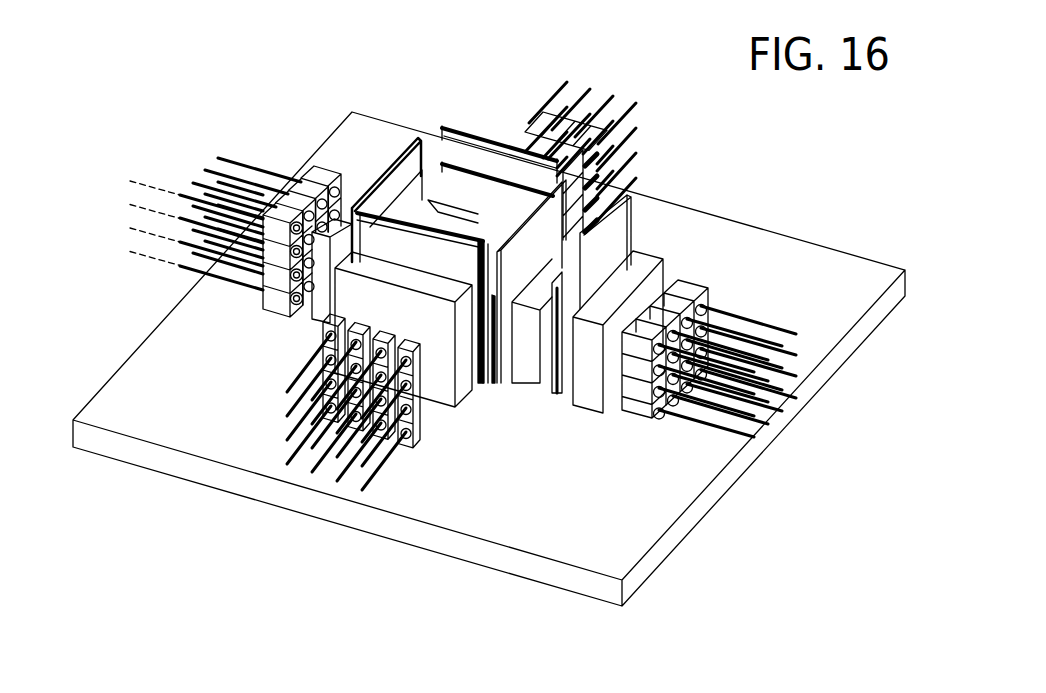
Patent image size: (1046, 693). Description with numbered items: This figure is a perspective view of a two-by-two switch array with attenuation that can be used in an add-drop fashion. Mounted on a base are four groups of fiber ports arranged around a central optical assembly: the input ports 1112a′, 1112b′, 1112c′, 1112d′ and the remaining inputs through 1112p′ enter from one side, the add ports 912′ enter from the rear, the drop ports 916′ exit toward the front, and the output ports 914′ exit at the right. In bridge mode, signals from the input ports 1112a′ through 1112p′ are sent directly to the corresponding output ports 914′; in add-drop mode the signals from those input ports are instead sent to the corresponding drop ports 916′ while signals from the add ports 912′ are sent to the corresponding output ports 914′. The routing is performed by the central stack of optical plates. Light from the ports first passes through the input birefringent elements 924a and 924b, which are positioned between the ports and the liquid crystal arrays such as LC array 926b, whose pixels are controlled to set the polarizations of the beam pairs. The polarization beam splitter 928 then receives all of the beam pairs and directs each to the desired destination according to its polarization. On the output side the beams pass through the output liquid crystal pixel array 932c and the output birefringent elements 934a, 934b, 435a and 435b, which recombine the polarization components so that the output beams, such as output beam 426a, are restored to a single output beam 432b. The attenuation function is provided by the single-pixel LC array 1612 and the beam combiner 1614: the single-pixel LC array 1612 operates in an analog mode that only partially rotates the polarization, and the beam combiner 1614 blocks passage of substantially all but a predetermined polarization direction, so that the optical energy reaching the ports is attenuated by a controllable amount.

The output liquid crystal pixel array 932c is at (400, 205).
The output beam 432b is at (405, 205).
The polarization beam splitter 928 is at (453, 218).
The output birefringent element 435a is at (478, 143).
The output birefringent element 435b is at (345, 180).
The output beam 426a is at (505, 128).
The add ports 912′ is at (612, 55).
The input birefringent element 924a is at (572, 196).
The LC array 926b is at (550, 226).
The beam combiner 1614 is at (655, 285).
The single-pixel LC array 1612 is at (565, 400).
The input birefringent element 924b is at (535, 387).
The output birefringent element 934a is at (453, 410).
The output birefringent element 934b is at (306, 314).
The drop ports 916′ is at (285, 365).
The output ports 914′ is at (822, 337).
The input port 1112a′ is at (148, 190).
The input port 1112b′ is at (130, 205).
The input port 1112c′ is at (131, 229).
The input port 1112d′ is at (148, 255).
The input port 1112p′ is at (180, 214).